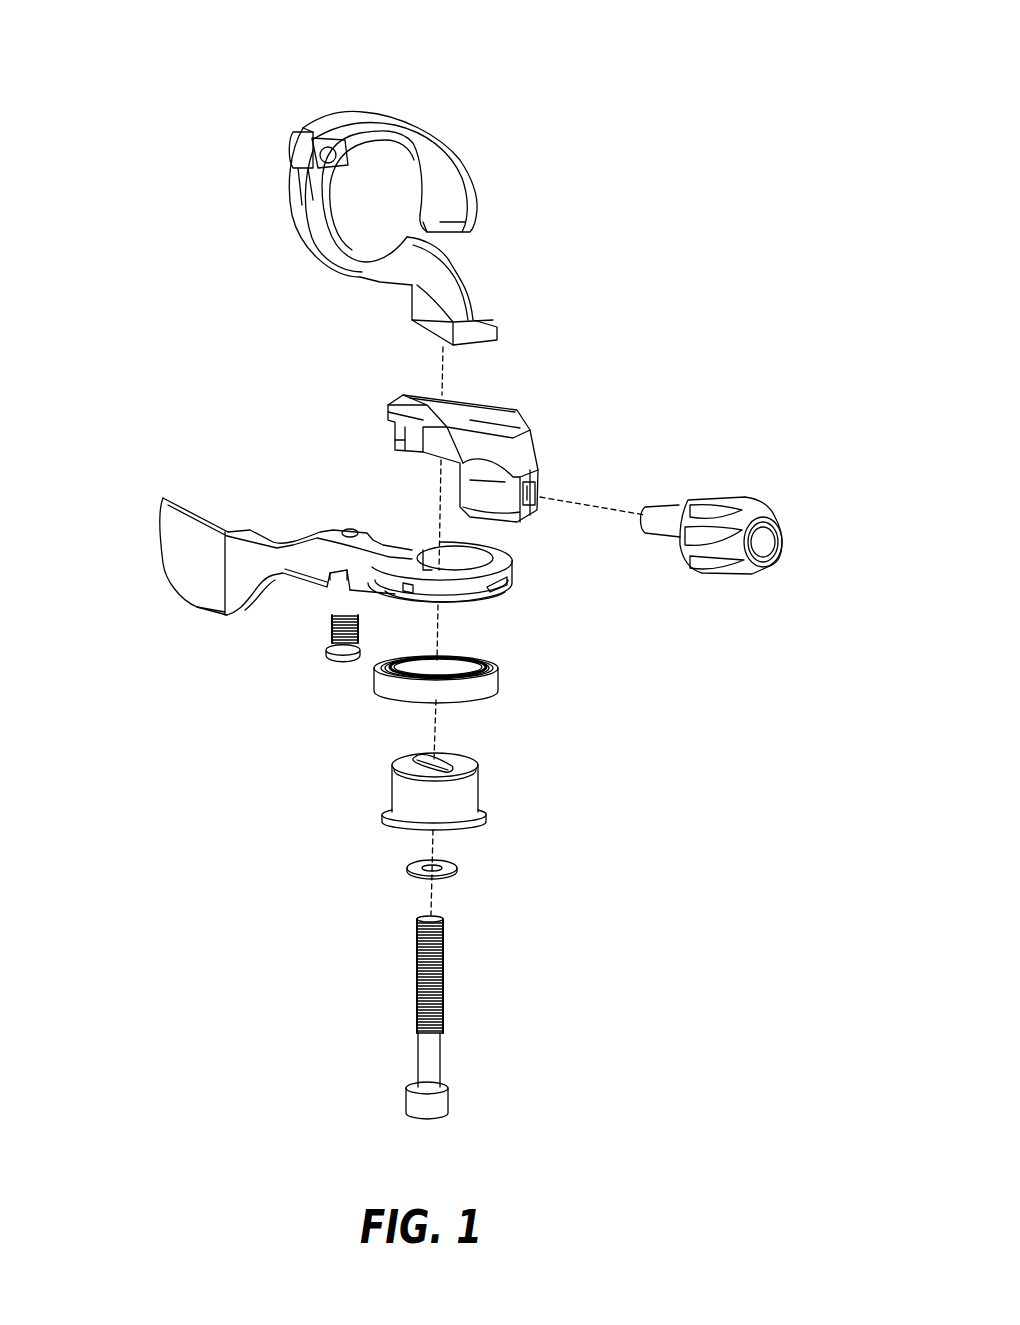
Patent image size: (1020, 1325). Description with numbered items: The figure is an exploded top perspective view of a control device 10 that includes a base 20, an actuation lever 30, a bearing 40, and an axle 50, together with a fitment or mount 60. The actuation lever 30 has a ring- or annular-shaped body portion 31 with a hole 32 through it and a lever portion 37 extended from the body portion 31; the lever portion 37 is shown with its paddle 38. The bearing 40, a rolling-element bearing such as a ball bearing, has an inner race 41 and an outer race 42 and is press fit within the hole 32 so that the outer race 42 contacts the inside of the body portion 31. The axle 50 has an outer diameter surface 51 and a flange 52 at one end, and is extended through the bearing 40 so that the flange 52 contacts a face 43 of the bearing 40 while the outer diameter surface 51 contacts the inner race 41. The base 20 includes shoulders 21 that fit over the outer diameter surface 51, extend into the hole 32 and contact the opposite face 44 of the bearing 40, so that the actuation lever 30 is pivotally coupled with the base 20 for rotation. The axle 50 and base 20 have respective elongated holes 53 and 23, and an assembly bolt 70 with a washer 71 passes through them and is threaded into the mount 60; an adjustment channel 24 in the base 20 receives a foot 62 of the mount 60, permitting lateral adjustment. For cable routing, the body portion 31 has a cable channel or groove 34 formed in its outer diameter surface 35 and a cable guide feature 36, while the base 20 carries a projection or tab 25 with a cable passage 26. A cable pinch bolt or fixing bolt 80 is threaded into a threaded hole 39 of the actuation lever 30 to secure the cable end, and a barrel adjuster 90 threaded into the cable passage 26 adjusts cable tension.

The control device 10 is at (743, 51).
The base 20 is at (459, 423).
The shoulders 21 is at (427, 457).
The hole 23 is at (445, 417).
The adjustment channel 24 is at (493, 437).
The projection or tab 25 is at (480, 483).
The cable passage 26 is at (521, 500).
The actuation lever 30 is at (368, 629).
The body portion 31 is at (484, 593).
The hole 32 is at (447, 562).
The cable channel or groove 34 is at (470, 592).
The outer diameter surface 35 is at (505, 572).
The cable guide feature 36 is at (355, 576).
The lever portion 37 is at (185, 639).
The lever paddle 38 is at (193, 558).
The threaded hole 39 is at (347, 533).
The bearing 40 is at (489, 687).
The inner race 41 is at (394, 659).
The outer race 42 is at (494, 684).
The face 43 is at (466, 703).
The face 44 is at (453, 660).
The axle 50 is at (394, 794).
The outer diameter surface 51 is at (397, 787).
The flange 52 is at (478, 812).
The hole 53 is at (425, 760).
The fitment or mount 60 is at (426, 222).
The foot 62 is at (433, 325).
The assembly bolt 70 is at (370, 989).
The washer 71 is at (410, 867).
The cable pinch bolt or fixing bolt 80 is at (317, 681).
The barrel adjuster 90 is at (756, 476).